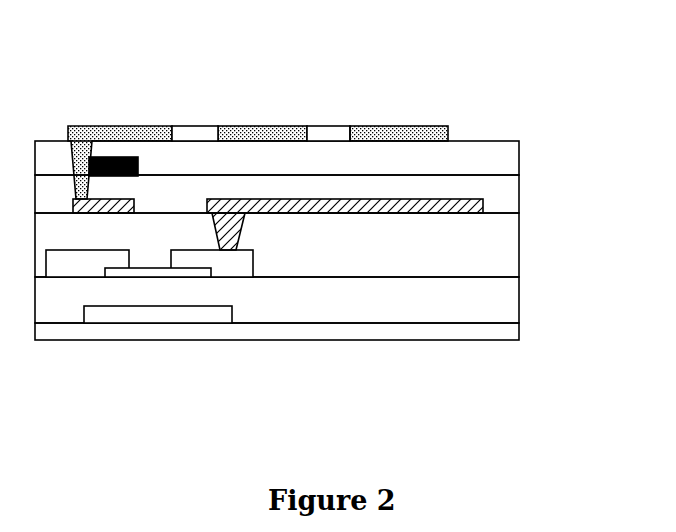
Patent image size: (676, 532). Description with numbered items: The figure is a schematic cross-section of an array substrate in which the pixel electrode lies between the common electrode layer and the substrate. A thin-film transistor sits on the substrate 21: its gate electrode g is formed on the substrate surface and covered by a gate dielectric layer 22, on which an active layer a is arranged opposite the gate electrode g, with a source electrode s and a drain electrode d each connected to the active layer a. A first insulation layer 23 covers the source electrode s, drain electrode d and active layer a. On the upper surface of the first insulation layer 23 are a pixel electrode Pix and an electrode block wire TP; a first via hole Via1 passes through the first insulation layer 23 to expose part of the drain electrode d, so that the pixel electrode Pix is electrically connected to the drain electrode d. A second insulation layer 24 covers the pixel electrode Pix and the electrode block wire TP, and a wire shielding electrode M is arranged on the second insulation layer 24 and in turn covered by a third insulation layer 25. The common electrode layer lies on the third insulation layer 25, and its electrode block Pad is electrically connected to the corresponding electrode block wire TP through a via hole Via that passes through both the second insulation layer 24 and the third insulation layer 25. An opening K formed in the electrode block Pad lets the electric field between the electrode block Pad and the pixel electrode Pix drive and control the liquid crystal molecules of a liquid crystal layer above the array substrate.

The substrate 21 is at (402, 338).
The gate dielectric layer 22 is at (440, 298).
The first insulation layer 23 is at (489, 252).
The second insulation layer 24 is at (508, 193).
The third insulation layer 25 is at (505, 157).
The gate electrode g is at (163, 315).
The source electrode s is at (76, 265).
The drain electrode d is at (240, 265).
The active layer a is at (128, 278).
The pixel electrode Pix is at (442, 207).
The first via hole Via1 is at (245, 232).
The electrode block wire TP is at (135, 199).
The via hole Via is at (72, 157).
The wire shielding electrode M is at (112, 157).
The electrode block Pad is at (235, 133).
The opening K is at (329, 135).